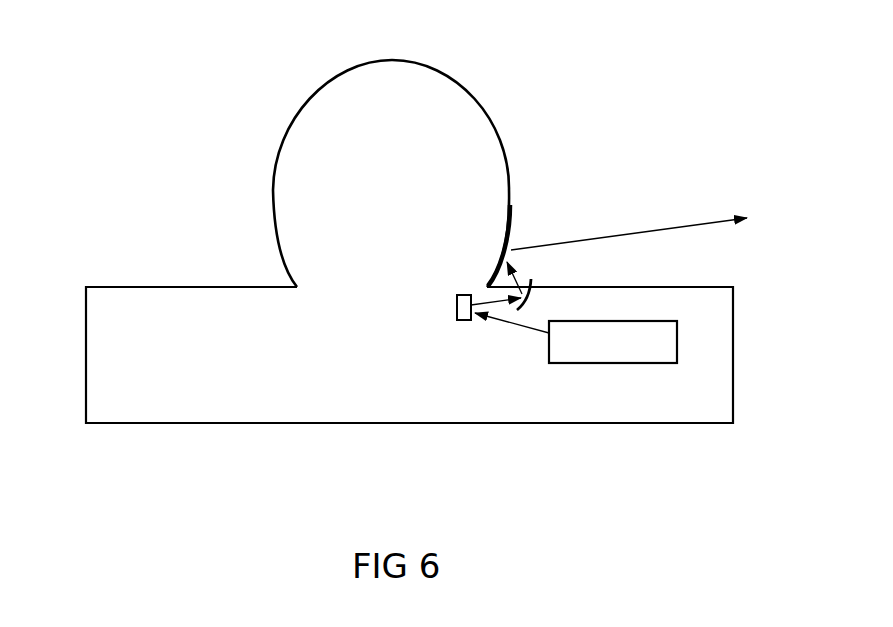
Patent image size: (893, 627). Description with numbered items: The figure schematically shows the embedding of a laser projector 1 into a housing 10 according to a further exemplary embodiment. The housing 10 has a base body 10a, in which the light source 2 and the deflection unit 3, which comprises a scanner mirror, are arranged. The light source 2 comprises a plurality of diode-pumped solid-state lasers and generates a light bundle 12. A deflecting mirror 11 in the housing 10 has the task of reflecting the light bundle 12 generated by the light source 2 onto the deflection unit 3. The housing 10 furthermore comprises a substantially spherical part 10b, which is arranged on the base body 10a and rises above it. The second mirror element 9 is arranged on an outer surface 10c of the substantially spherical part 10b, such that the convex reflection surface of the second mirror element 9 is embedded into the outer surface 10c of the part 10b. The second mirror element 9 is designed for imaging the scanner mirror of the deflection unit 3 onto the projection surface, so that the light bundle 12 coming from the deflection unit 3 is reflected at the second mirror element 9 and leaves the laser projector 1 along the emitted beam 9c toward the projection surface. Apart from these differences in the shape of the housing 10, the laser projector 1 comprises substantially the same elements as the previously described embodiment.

The laser projector 1 is at (128, 153).
The light source 2 is at (618, 363).
The deflection unit 3 is at (460, 322).
The second mirror element 9 is at (512, 216).
The reflected light beam 9c is at (512, 248).
The housing 10 is at (86, 351).
The base body 10a is at (228, 408).
The substantially spherical part 10b is at (297, 167).
The outer surface 10c is at (505, 150).
The deflecting mirror 11 is at (522, 296).
The light bundle 12 is at (505, 323).